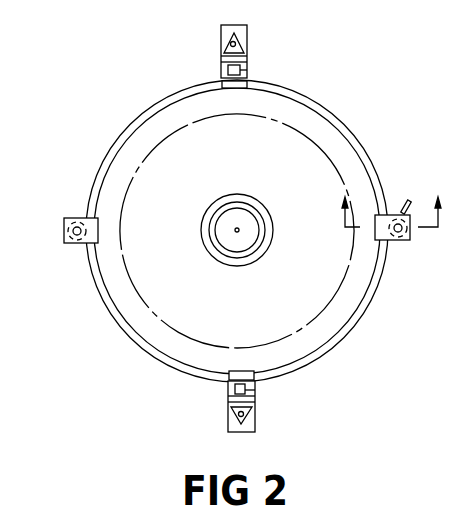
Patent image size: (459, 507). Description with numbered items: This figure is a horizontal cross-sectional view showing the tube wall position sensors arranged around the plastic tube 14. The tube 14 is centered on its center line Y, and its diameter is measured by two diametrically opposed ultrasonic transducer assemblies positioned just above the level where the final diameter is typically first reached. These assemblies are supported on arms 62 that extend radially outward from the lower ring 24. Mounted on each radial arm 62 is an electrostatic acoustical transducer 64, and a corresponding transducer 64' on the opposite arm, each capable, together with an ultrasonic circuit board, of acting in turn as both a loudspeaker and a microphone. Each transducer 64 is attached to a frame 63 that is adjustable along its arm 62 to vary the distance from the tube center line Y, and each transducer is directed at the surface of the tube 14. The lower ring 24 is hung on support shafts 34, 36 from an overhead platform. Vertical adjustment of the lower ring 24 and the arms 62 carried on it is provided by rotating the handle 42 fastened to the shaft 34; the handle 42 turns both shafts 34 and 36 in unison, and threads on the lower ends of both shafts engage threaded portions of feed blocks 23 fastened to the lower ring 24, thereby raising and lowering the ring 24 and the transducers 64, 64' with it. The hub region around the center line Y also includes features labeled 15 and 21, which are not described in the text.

The plastic tube 14 is at (135, 292).
The hub 15 is at (268, 252).
The bearing 21 is at (250, 258).
The feed block 23 is at (66, 221).
The lower ring 24 is at (139, 343).
The support shaft 34 is at (73, 238).
The support shaft 36 is at (400, 231).
The handle 42 is at (408, 199).
The arm 62 is at (247, 27).
The frame 63 is at (221, 57).
The electrostatic acoustical transducer 64 is at (276, 404).
The pin 64' is at (268, 55).
The tube center line Y is at (237, 230).